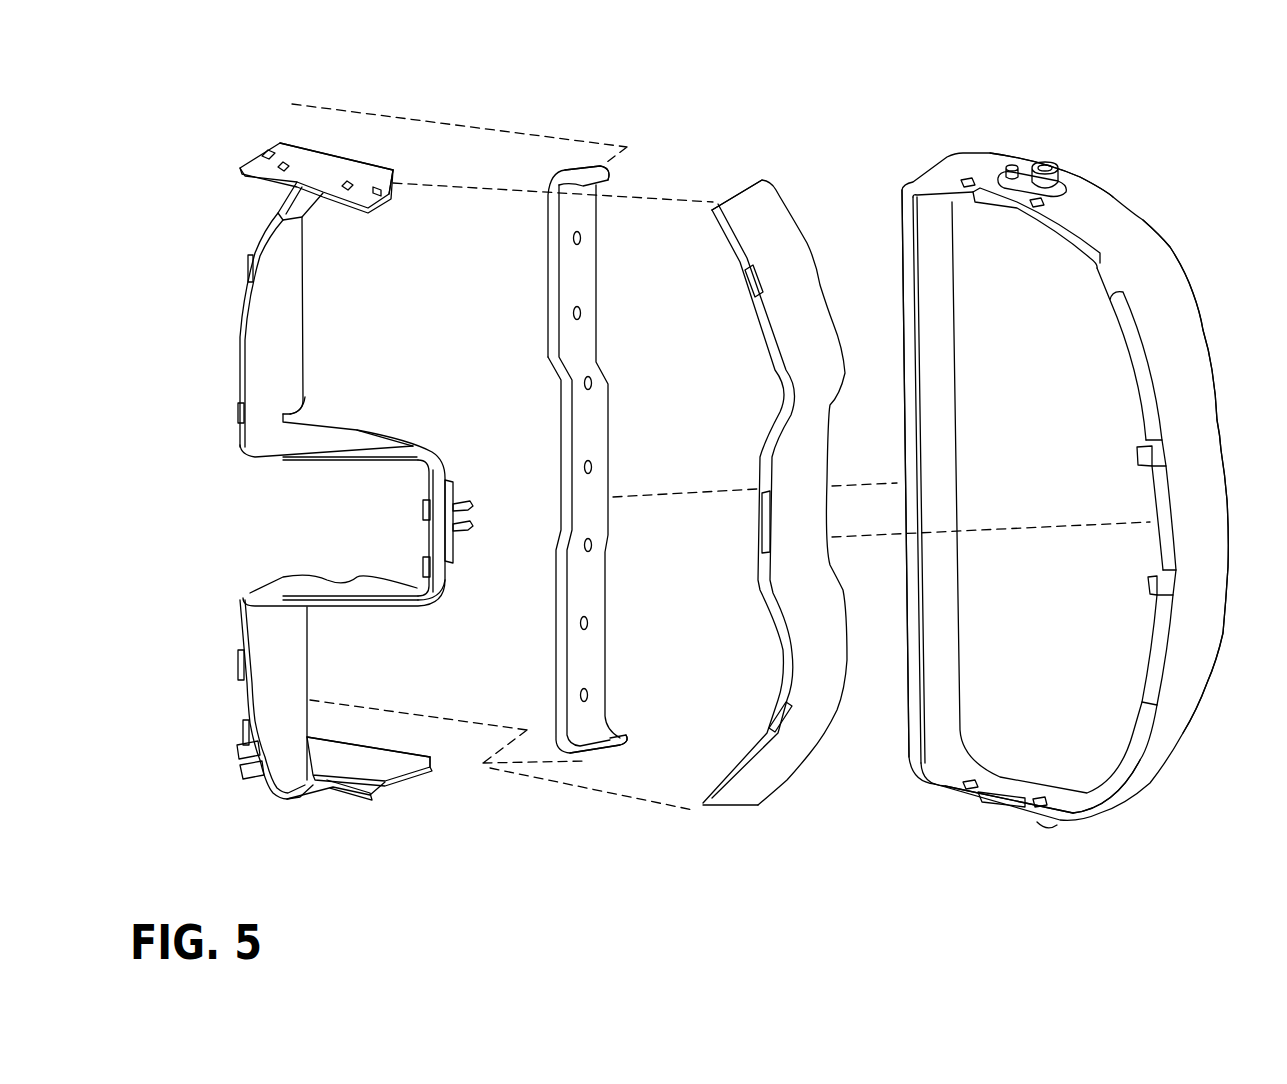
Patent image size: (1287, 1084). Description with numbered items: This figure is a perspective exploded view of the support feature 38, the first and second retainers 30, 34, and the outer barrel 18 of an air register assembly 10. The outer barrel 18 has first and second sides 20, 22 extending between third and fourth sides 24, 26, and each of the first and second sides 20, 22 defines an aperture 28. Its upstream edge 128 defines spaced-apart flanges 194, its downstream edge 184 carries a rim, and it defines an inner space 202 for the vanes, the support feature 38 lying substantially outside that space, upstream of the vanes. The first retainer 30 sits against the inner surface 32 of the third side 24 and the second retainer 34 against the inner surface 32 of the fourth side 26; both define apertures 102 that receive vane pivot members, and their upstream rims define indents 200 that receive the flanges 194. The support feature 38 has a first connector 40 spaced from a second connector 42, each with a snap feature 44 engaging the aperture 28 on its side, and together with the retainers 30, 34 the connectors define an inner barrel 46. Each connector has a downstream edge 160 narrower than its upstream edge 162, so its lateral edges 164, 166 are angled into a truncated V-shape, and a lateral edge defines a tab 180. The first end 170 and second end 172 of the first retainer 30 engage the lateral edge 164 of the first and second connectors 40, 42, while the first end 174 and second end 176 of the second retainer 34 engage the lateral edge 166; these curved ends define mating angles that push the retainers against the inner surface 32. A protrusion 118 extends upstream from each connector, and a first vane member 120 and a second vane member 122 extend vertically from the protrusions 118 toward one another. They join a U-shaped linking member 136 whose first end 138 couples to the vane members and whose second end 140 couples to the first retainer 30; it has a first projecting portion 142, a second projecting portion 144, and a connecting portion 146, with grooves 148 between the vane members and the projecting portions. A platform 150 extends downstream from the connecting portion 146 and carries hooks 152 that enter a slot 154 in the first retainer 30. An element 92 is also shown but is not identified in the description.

The air register assembly 10 is at (1165, 150).
The outer barrel 18 is at (1180, 255).
The first side 20 is at (1075, 172).
The second side 22 is at (997, 800).
The third side 24 is at (1200, 443).
The fourth side 26 is at (897, 247).
The aperture 28 is at (968, 178).
The first retainer 30 is at (762, 213).
The inner surface 32 is at (933, 430).
The second retainer 34 is at (552, 273).
The support feature 38 is at (240, 170).
The first connector 40 is at (337, 163).
The second connector 42 is at (370, 793).
The snap feature 44 is at (284, 167).
The inner barrel 46 is at (747, 877).
The bosses 92 is at (1045, 165).
The apertures 102 is at (580, 238).
The protrusion 118 is at (284, 211).
The first vane member 120 is at (280, 330).
The second vane member 122 is at (280, 657).
The upstream edge 128 is at (935, 190).
The linking member 136 is at (395, 437).
The first end 138 is at (283, 463).
The second end 140 is at (447, 473).
The first projecting portion 142 is at (357, 440).
The second projecting portion 144 is at (343, 605).
The connecting portion 146 is at (447, 578).
The groove 148 is at (284, 411).
The platform 150 is at (452, 542).
The hooks 152 is at (462, 527).
The slot 154 is at (760, 510).
The downstream edge 160 is at (380, 162).
The upstream edge 162 is at (275, 175).
The lateral edge 164 is at (392, 184).
The lateral edge 166 is at (273, 140).
The first end 170 is at (733, 200).
The second end 172 is at (703, 803).
The first end 174 is at (591, 172).
The second end 176 is at (607, 755).
The tab 180 is at (257, 155).
The downstream edge 184 is at (1100, 190).
The flanges 194 is at (1100, 273).
The indents 200 is at (752, 283).
The inner space 202 is at (1040, 717).